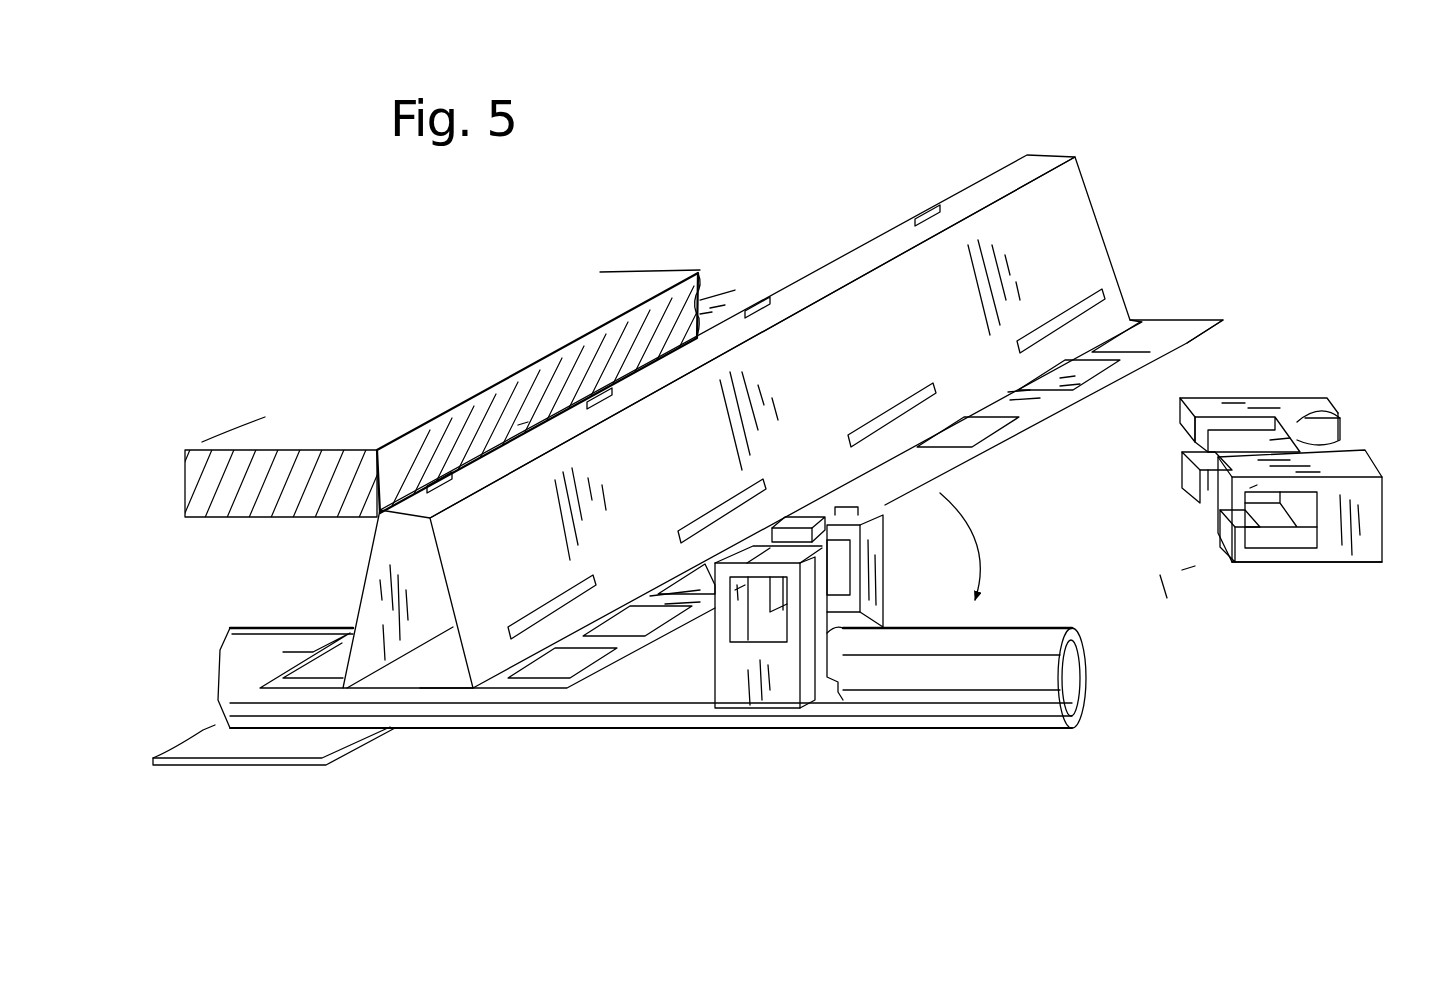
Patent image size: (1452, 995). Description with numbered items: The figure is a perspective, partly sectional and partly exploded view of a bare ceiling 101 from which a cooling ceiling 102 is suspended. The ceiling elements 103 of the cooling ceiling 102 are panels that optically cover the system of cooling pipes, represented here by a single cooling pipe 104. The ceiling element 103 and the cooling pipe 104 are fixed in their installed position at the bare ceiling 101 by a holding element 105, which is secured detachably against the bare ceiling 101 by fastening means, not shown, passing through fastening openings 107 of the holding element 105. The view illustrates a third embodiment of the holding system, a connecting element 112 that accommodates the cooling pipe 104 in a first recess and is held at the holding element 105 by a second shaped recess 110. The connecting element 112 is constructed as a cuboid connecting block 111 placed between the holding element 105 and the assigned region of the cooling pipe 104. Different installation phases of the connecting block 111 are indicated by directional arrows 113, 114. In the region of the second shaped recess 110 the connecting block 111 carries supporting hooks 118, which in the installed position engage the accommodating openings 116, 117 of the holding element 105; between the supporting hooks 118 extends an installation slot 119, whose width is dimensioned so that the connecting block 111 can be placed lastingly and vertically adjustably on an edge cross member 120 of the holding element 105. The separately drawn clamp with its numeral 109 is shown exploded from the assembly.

The bare ceiling 101 is at (290, 470).
The cooling ceiling 102 is at (228, 805).
The ceiling element 103 is at (308, 748).
The cooling pipe 104 is at (1020, 710).
The holding element 105 is at (826, 262).
The fastening openings 107 is at (757, 305).
The clamp 109 is at (838, 683).
The second shaped recess 110 is at (783, 630).
The connecting block 111 is at (735, 690).
The connecting element 112 is at (708, 695).
The directional arrow 113 is at (1010, 468).
The directional arrow 114 is at (1000, 546).
The accommodating openings 116 is at (880, 475).
The accommodating openings 117 is at (955, 437).
The supporting hooks 118 is at (1196, 450).
The installation slot 119 is at (763, 567).
The edge cross member 120 is at (1185, 333).